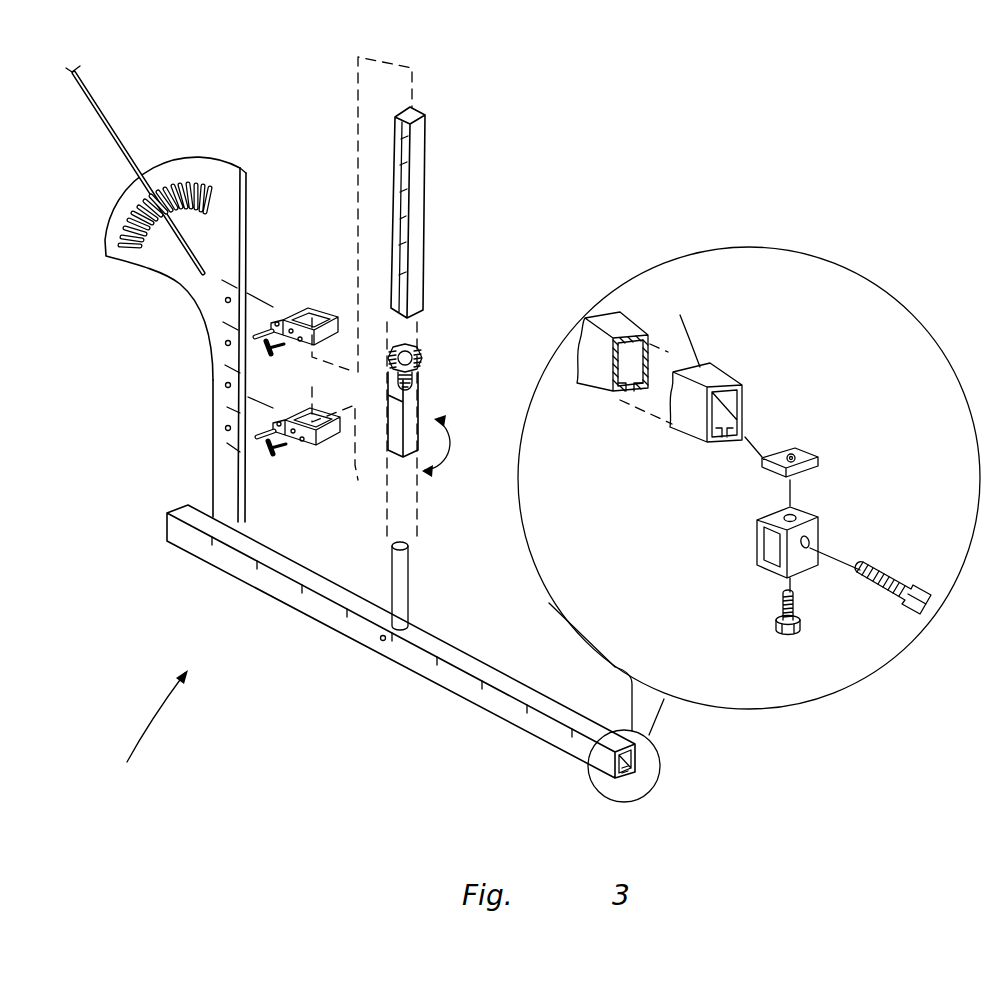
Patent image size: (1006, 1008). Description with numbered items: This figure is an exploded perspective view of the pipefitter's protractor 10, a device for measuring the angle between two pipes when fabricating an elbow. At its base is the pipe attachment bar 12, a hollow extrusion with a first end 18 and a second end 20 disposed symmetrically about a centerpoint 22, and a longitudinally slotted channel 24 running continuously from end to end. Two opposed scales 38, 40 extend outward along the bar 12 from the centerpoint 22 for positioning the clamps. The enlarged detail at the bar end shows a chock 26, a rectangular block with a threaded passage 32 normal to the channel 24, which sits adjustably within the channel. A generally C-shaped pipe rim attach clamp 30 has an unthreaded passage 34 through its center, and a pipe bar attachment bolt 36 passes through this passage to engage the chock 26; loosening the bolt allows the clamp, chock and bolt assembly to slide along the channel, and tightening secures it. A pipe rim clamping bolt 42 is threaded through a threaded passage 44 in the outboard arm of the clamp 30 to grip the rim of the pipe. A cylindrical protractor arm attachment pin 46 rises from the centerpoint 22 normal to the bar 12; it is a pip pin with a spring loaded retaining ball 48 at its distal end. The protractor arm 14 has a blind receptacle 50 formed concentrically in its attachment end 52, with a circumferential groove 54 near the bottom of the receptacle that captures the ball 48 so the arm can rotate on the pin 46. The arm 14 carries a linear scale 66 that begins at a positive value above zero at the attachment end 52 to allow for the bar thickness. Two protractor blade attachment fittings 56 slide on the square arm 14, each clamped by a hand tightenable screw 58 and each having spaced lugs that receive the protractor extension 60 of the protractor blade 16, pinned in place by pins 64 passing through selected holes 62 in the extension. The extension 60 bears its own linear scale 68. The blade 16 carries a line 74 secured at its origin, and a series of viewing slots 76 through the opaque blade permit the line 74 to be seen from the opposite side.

The pipefitter's protractor 10 is at (137, 742).
The pipe attachment bar 12 is at (627, 323).
The protractor arm 14 is at (425, 188).
The protractor blade 16 is at (107, 223).
The first end 18 is at (167, 522).
The second end 20 is at (722, 365).
The centerpoint 22 is at (378, 642).
The longitudinally slotted channel 24 is at (632, 392).
The chock 26 is at (790, 447).
The second pipe rim attach clamp 30 is at (757, 548).
The threaded passage 32 is at (795, 456).
The unthreaded passage 34 is at (797, 517).
The pipe bar attachment bolt 36 is at (782, 633).
The scale 38 is at (277, 590).
The scale 40 is at (478, 703).
The pipe rim clamping bolt 42 is at (905, 582).
The threaded passage 44 is at (807, 556).
The protractor arm attachment pin 46 is at (410, 596).
The spring loaded retaining ball 48 is at (405, 552).
The blind receptacle 50 is at (413, 371).
The attachment end 52 is at (387, 453).
The circumferential groove 54 is at (420, 353).
The protractor blade attachment fitting 56 is at (312, 308).
The hand tightenable screw 58 is at (270, 438).
The protractor extension 60 is at (210, 442).
The holes 62 is at (226, 384).
The pin 64 is at (263, 328).
The linear scale 66 is at (405, 237).
The linear scale 68 is at (217, 400).
The line 74 is at (110, 118).
The viewing slots 76 is at (207, 183).